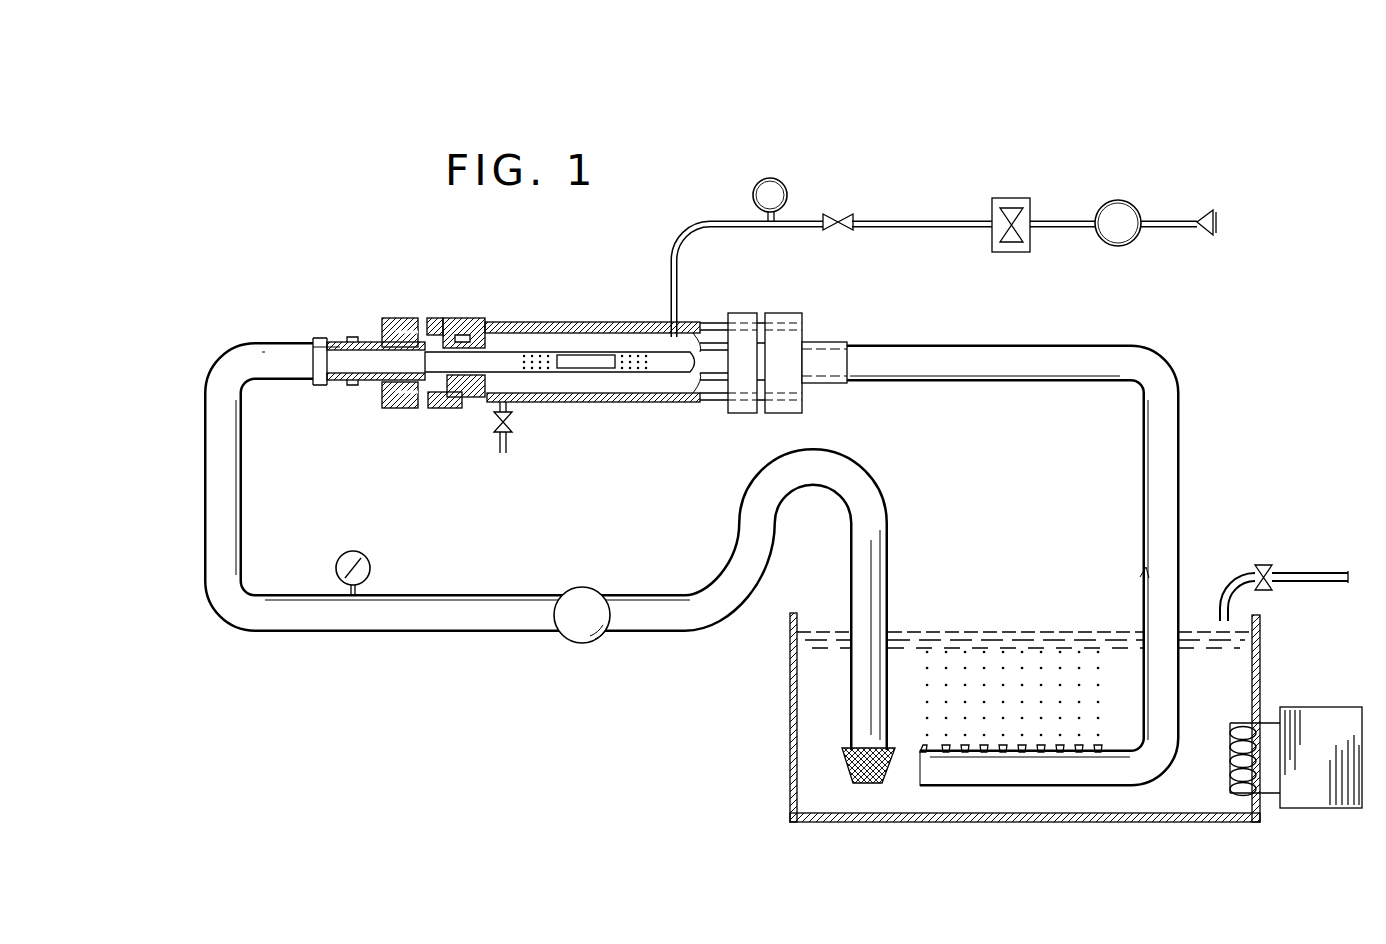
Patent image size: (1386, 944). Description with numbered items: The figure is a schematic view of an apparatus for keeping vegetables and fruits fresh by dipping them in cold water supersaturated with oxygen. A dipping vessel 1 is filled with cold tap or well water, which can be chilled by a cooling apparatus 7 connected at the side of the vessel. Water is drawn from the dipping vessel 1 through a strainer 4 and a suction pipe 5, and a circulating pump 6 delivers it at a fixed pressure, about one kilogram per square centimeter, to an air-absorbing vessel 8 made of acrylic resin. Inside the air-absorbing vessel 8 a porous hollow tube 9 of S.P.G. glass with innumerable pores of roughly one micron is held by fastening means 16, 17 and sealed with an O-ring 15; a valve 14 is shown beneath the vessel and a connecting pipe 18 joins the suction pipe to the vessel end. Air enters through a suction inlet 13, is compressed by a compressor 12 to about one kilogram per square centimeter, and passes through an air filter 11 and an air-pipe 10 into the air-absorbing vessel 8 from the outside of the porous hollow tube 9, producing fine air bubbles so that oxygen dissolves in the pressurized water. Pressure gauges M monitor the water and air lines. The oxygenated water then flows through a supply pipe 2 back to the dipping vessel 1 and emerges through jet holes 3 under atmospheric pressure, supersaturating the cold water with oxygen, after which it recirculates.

The dipping vessel 1 is at (1262, 676).
The supply pipe 2 is at (1172, 500).
The jet holes 3 is at (1065, 745).
The strainer 4 is at (866, 785).
The suction pipe 5 is at (240, 474).
The circulating pump 6 is at (583, 588).
The cooling apparatus 7 is at (1325, 707).
The air-absorbing vessel 8 is at (592, 309).
The porous hollow tube 9 is at (563, 372).
The air-pipe 10 is at (671, 264).
The air filter 11 is at (1014, 198).
The compressor 12 is at (1122, 200).
The suction inlet 13 is at (1213, 222).
The drain valve 14 is at (507, 440).
The O-ring 15 is at (437, 318).
The fastening means 16 is at (465, 322).
The fastening means 17 is at (400, 318).
The connecting pipe 18 is at (350, 336).
The manometer M is at (792, 177).